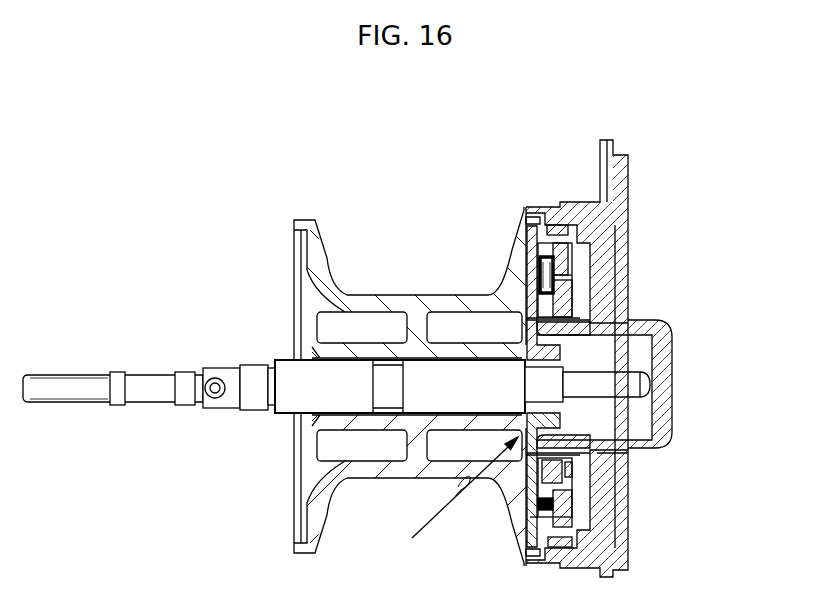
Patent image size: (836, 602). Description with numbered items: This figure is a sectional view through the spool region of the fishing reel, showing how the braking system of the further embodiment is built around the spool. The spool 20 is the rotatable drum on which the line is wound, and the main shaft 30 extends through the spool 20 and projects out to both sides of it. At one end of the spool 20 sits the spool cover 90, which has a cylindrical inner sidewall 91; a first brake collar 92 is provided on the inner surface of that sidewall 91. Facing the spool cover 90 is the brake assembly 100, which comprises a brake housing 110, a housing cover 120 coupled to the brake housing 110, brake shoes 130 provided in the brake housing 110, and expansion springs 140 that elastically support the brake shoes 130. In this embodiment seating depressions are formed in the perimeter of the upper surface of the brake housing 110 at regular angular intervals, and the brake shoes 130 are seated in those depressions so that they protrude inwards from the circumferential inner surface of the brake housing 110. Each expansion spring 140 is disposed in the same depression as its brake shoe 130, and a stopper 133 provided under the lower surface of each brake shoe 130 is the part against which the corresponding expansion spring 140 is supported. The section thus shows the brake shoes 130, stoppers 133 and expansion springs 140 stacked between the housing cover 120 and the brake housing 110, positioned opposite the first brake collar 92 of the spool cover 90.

The spool 20 is at (377, 300).
The main shaft 30 is at (318, 390).
The spool cover 90 is at (668, 397).
The cylindrical inner sidewall 91 is at (545, 208).
The first brake collar 92 is at (570, 228).
The brake assembly 100 is at (448, 504).
The brake housing 110 is at (503, 291).
The housing cover 120 is at (570, 461).
The brake shoe 130 is at (572, 297).
The stopper 133 is at (605, 323).
The expansion spring 140 is at (524, 222).